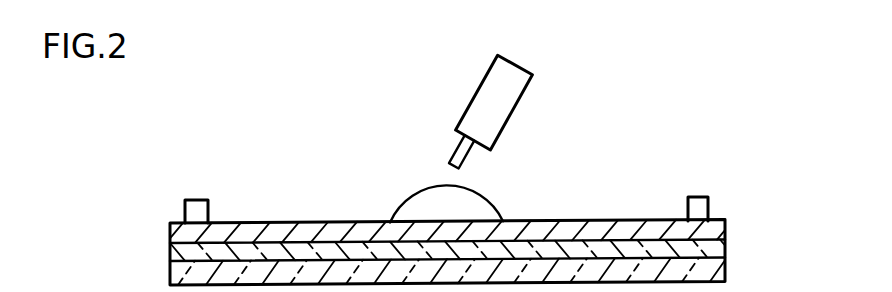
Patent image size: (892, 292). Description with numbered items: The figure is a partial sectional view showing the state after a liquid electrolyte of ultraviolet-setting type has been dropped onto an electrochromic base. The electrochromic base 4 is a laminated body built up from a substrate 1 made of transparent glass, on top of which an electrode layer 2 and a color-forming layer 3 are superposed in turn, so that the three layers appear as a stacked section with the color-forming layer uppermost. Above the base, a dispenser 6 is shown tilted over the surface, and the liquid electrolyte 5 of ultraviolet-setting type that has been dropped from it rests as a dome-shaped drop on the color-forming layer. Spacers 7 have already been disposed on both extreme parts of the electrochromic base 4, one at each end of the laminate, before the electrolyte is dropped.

The substrate 1 is at (720, 268).
The electrode layer 2 is at (718, 249).
The color-forming layer 3 is at (717, 228).
The electrochromic base 4 is at (762, 213).
The liquid electrolyte 5 is at (485, 207).
The dispenser 6 is at (502, 112).
The spacers 7 is at (195, 207).